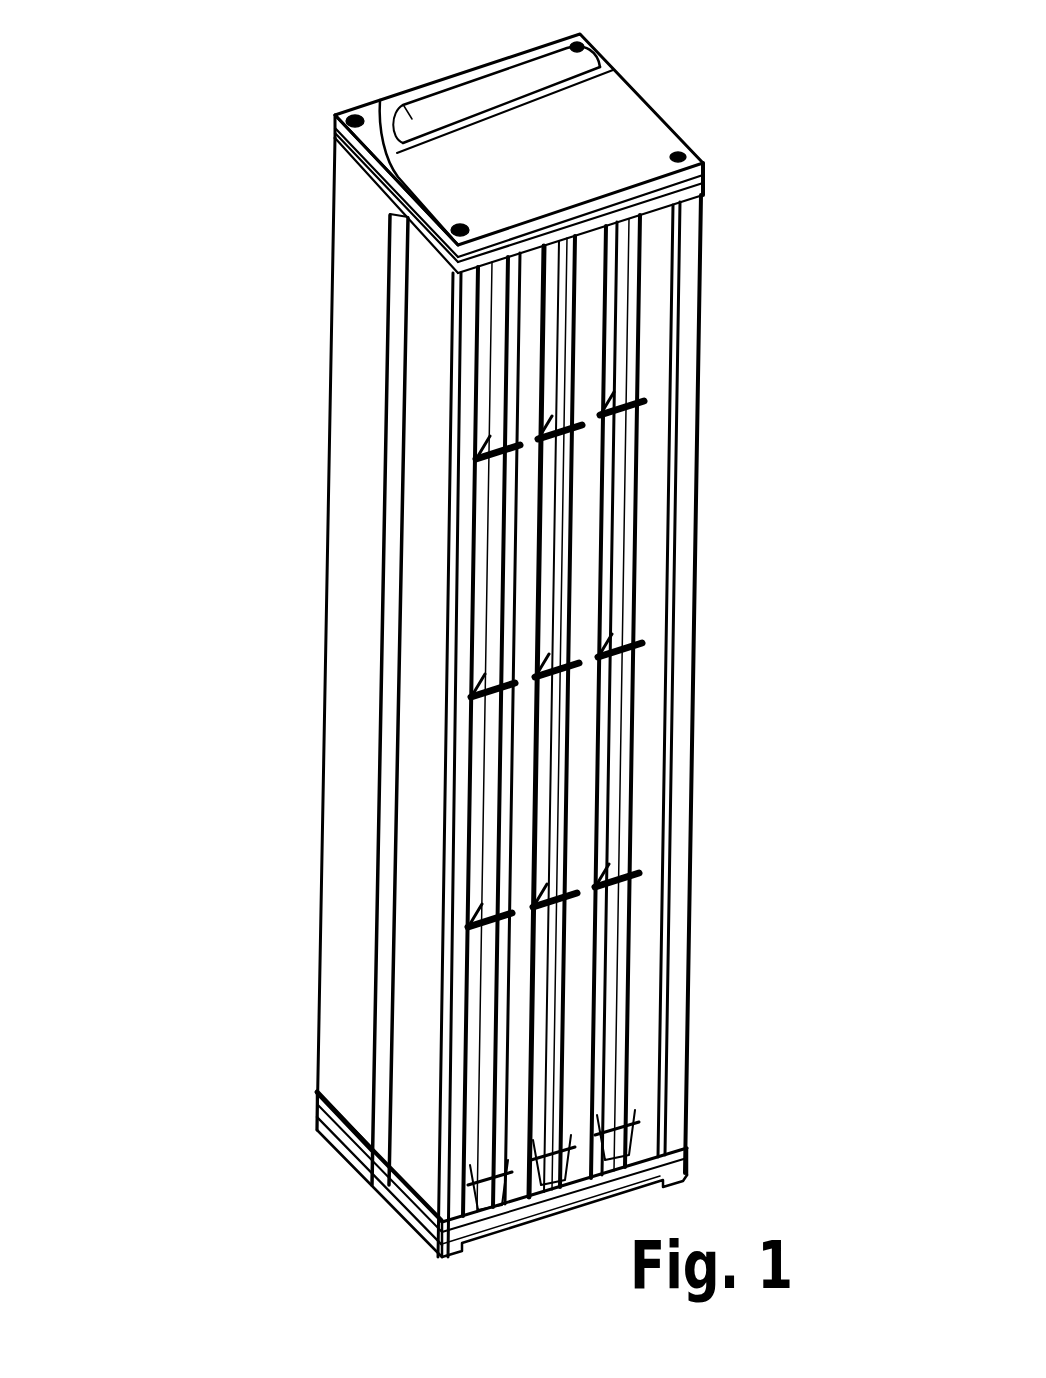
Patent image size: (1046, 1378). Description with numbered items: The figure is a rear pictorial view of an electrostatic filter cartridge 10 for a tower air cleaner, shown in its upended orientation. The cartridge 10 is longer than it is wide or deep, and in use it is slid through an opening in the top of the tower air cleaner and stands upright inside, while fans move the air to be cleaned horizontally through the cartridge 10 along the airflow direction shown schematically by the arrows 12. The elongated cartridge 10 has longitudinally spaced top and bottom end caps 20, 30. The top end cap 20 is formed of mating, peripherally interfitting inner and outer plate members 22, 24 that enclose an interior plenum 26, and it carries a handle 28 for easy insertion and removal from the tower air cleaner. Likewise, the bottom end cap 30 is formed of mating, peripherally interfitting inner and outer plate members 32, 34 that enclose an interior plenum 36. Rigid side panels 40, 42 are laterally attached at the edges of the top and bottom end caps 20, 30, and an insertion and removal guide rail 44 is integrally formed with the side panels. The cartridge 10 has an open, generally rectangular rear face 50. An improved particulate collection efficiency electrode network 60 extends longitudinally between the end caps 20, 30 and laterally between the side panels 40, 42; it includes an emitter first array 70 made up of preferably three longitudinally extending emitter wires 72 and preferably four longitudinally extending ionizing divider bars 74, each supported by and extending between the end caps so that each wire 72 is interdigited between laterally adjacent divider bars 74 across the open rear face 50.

The electrostatic filter cartridge 10 is at (456, 697).
The arrows 12 is at (507, 697).
The top end cap 20 is at (518, 136).
The inner plate member 22 is at (690, 188).
The outer plate member 24 is at (600, 113).
The interior plenum 26 is at (349, 186).
The handle 28 is at (573, 62).
The bottom end cap 30 is at (516, 1143).
The inner plate member 32 is at (668, 1167).
The outer plate member 34 is at (668, 1135).
The interior plenum 36 is at (708, 1054).
The rigid side panel 40 is at (345, 700).
The rigid side panel 42 is at (700, 510).
The insertion and removal guide rail 44 is at (380, 518).
The open rear face 50 is at (719, 612).
The electrode network 60 is at (597, 404).
The emitter first array 70 is at (592, 725).
The emitter wire 72 is at (505, 862).
The ionizing divider bar 74 is at (653, 450).